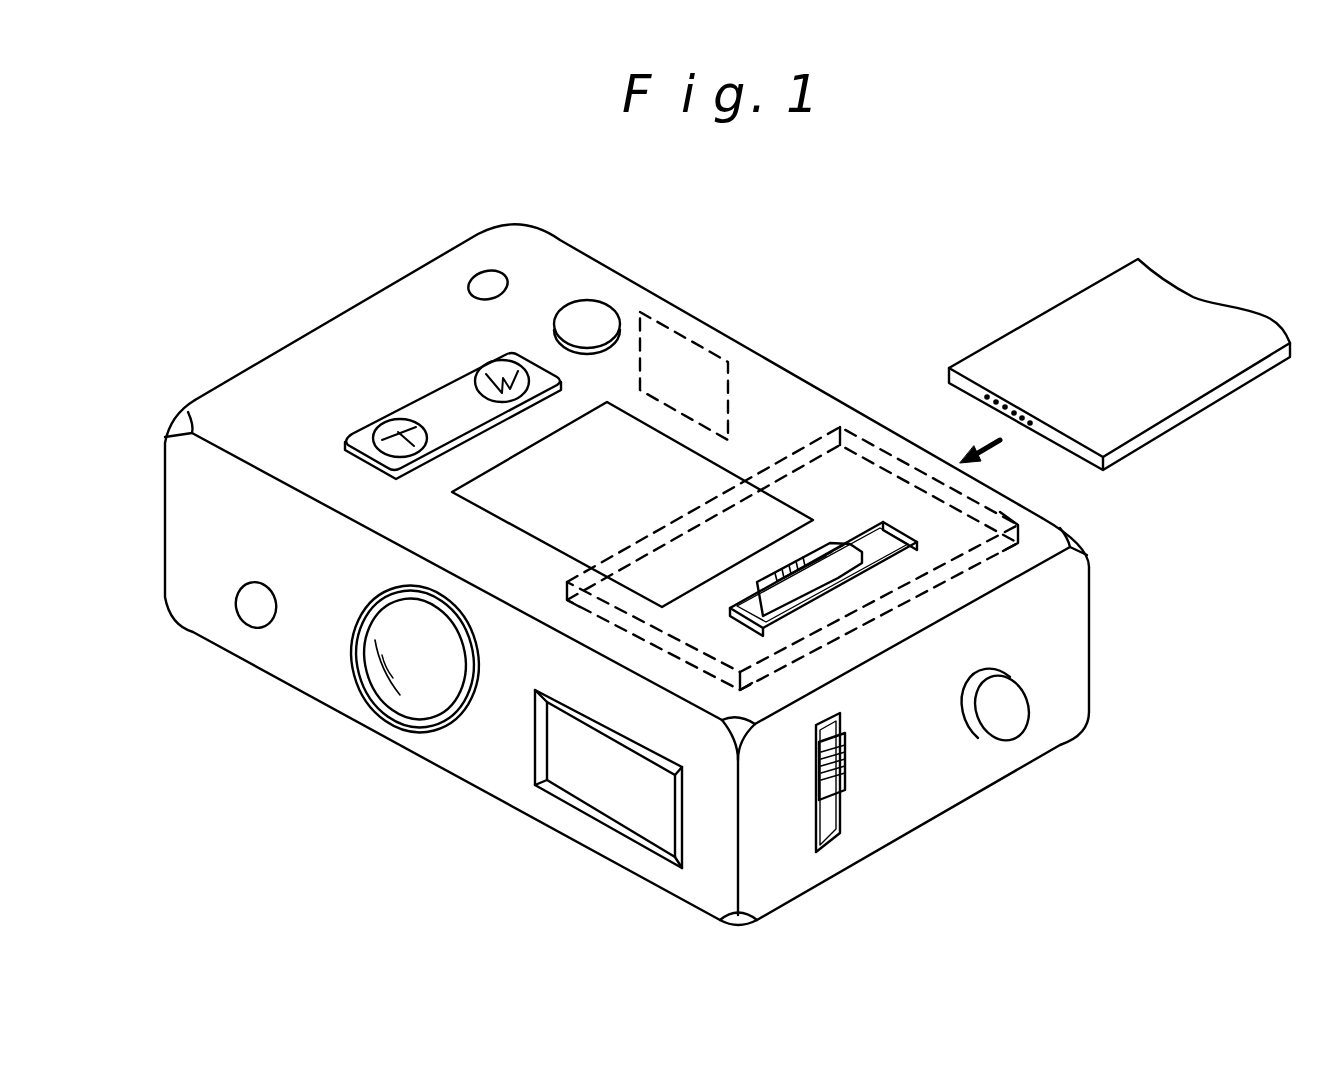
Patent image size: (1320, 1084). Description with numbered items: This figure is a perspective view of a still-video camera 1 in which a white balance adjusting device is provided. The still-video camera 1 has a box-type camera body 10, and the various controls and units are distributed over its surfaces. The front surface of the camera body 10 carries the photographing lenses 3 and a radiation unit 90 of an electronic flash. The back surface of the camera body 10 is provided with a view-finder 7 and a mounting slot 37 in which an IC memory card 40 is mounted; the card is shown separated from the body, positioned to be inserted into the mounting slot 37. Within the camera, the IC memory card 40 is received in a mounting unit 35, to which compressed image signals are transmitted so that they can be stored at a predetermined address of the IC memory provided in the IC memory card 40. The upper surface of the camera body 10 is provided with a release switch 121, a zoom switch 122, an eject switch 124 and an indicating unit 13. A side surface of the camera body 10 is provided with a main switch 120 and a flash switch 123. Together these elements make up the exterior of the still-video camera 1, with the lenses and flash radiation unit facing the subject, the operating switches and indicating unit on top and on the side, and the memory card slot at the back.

The still-video camera 1 is at (290, 732).
The photographing lenses 3 is at (408, 693).
The view-finder 7 is at (687, 337).
The camera body 10 is at (268, 386).
The indicating unit 13 is at (733, 490).
The mounting unit 35 is at (952, 552).
The mounting slot 37 is at (1013, 514).
The IC memory card 40 is at (1043, 343).
The radiation unit 90 is at (583, 787).
The main switch 120 is at (847, 822).
The release switch 121 is at (589, 316).
The zoom switch 122 is at (483, 363).
The flash switch 123 is at (1013, 715).
The eject switch 124 is at (812, 550).